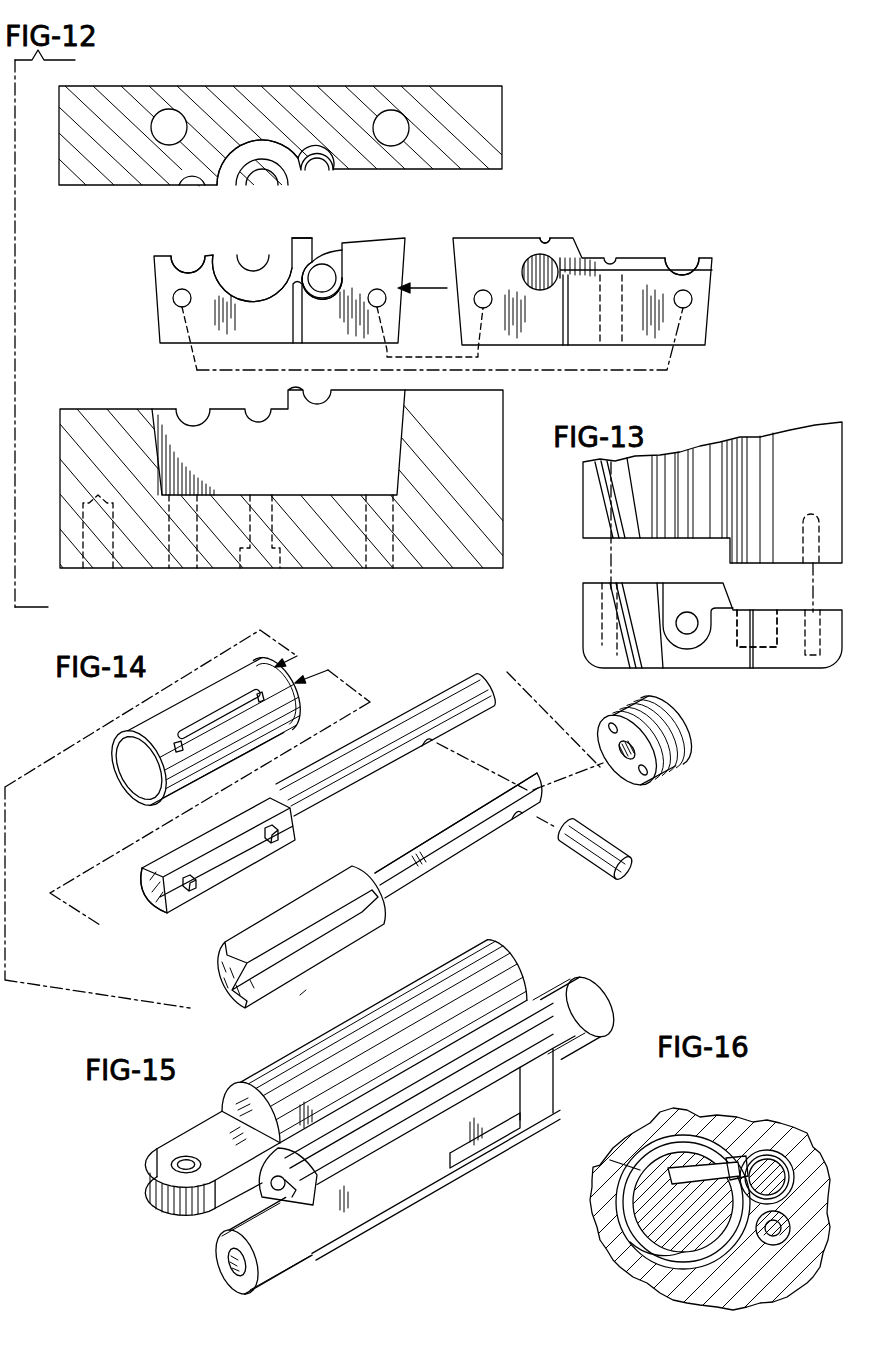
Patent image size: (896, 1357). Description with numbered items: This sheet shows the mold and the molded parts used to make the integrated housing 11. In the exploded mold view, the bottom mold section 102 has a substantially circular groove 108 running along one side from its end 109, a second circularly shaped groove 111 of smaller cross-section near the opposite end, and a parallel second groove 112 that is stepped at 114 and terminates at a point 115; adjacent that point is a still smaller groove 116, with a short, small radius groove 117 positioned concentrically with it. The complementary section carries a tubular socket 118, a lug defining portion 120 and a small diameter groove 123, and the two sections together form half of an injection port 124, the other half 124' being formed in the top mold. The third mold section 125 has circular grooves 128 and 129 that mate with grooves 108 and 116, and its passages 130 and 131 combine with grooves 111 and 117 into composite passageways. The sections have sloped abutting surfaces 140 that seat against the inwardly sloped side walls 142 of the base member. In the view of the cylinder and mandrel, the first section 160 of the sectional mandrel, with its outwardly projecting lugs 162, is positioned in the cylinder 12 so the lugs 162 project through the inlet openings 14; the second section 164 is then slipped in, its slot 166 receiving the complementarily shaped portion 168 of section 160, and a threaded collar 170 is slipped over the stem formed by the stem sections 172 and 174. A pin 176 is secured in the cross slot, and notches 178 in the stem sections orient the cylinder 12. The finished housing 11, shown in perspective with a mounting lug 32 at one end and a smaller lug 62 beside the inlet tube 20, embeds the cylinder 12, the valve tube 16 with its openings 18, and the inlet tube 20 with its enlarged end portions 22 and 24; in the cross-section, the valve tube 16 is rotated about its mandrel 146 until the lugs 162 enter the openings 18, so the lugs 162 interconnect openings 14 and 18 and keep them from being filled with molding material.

In FIG. 15, the housing 11 is at (573, 970).
In FIG. 14, the first tubular member 12 is at (116, 779).
In FIG. 16, the first tubular member 12 is at (643, 1165).
In FIG. 14, the openings 14 is at (175, 744).
In FIG. 16, the openings 14 is at (718, 1187).
In FIG. 16, the second tubular member 16 is at (773, 1140).
In FIG. 16, the openings 18 is at (762, 1265).
In FIG. 16, the third tubular member 20 is at (790, 1240).
In FIG. 15, the enlarged end portion 22 is at (465, 1160).
In FIG. 15, the enlarged end portion 24 is at (216, 1250).
In FIG. 15, the lug 32 is at (165, 1147).
In FIG. 15, the lug 62 is at (290, 1186).
In FIG. 16, the mold section 102 is at (612, 1257).
In FIG. 12, the circular groove 108 is at (250, 298).
In FIG. 12, the end 109 is at (163, 281).
In FIG. 12, the second circularly shaped groove 111 is at (255, 270).
In FIG. 12, the second groove 112 is at (322, 299).
In FIG. 12, the step 114 is at (341, 278).
In FIG. 12, the point 115 is at (330, 268).
In FIG. 12, the groove 116 is at (320, 250).
In FIG. 12, the small radius groove 117 is at (312, 250).
In FIG. 12, the tubular socket 118 is at (553, 262).
In FIG. 13, the tubular socket 118 is at (777, 657).
In FIG. 12, the lug defining portion 120 is at (628, 258).
In FIG. 13, the lug defining portion 120 is at (690, 645).
In FIG. 12, the small diameter groove 123 is at (545, 238).
In FIG. 13, the small diameter groove 123 is at (752, 668).
In FIG. 12, the injection port 124 is at (413, 313).
In FIG. 13, the injection port 124 is at (588, 563).
In FIG. 12, the hole 124' is at (174, 194).
In FIG. 12, the third mold section 125 is at (493, 110).
In FIG. 16, the third mold section 125 is at (605, 1183).
In FIG. 12, the circular groove 128 is at (253, 141).
In FIG. 12, the circular groove 129 is at (331, 148).
In FIG. 12, the passage 130 is at (258, 171).
In FIG. 12, the passage 131 is at (315, 157).
In FIG. 13, the sloped abutting surfaces 140 is at (728, 550).
In FIG. 12, the side walls 142 is at (160, 435).
In FIG. 16, the mandrel 146 is at (780, 1170).
In FIG. 14, the first section 160 is at (303, 818).
In FIG. 16, the first section 160 is at (686, 1166).
In FIG. 14, the lugs 162 is at (271, 845).
In FIG. 16, the lugs 162 is at (748, 1153).
In FIG. 14, the second section 164 is at (449, 866).
In FIG. 16, the second section 164 is at (660, 1237).
In FIG. 14, the slot 166 is at (262, 968).
In FIG. 16, the slot 166 is at (680, 1207).
In FIG. 14, the complementarily shaped portion 168 is at (158, 906).
In FIG. 14, the threaded collar 170 is at (637, 785).
In FIG. 14, the stem section 172 is at (358, 768).
In FIG. 14, the stem section 174 is at (406, 874).
In FIG. 14, the pin 176 is at (628, 874).
In FIG. 14, the notches 178 is at (433, 733).